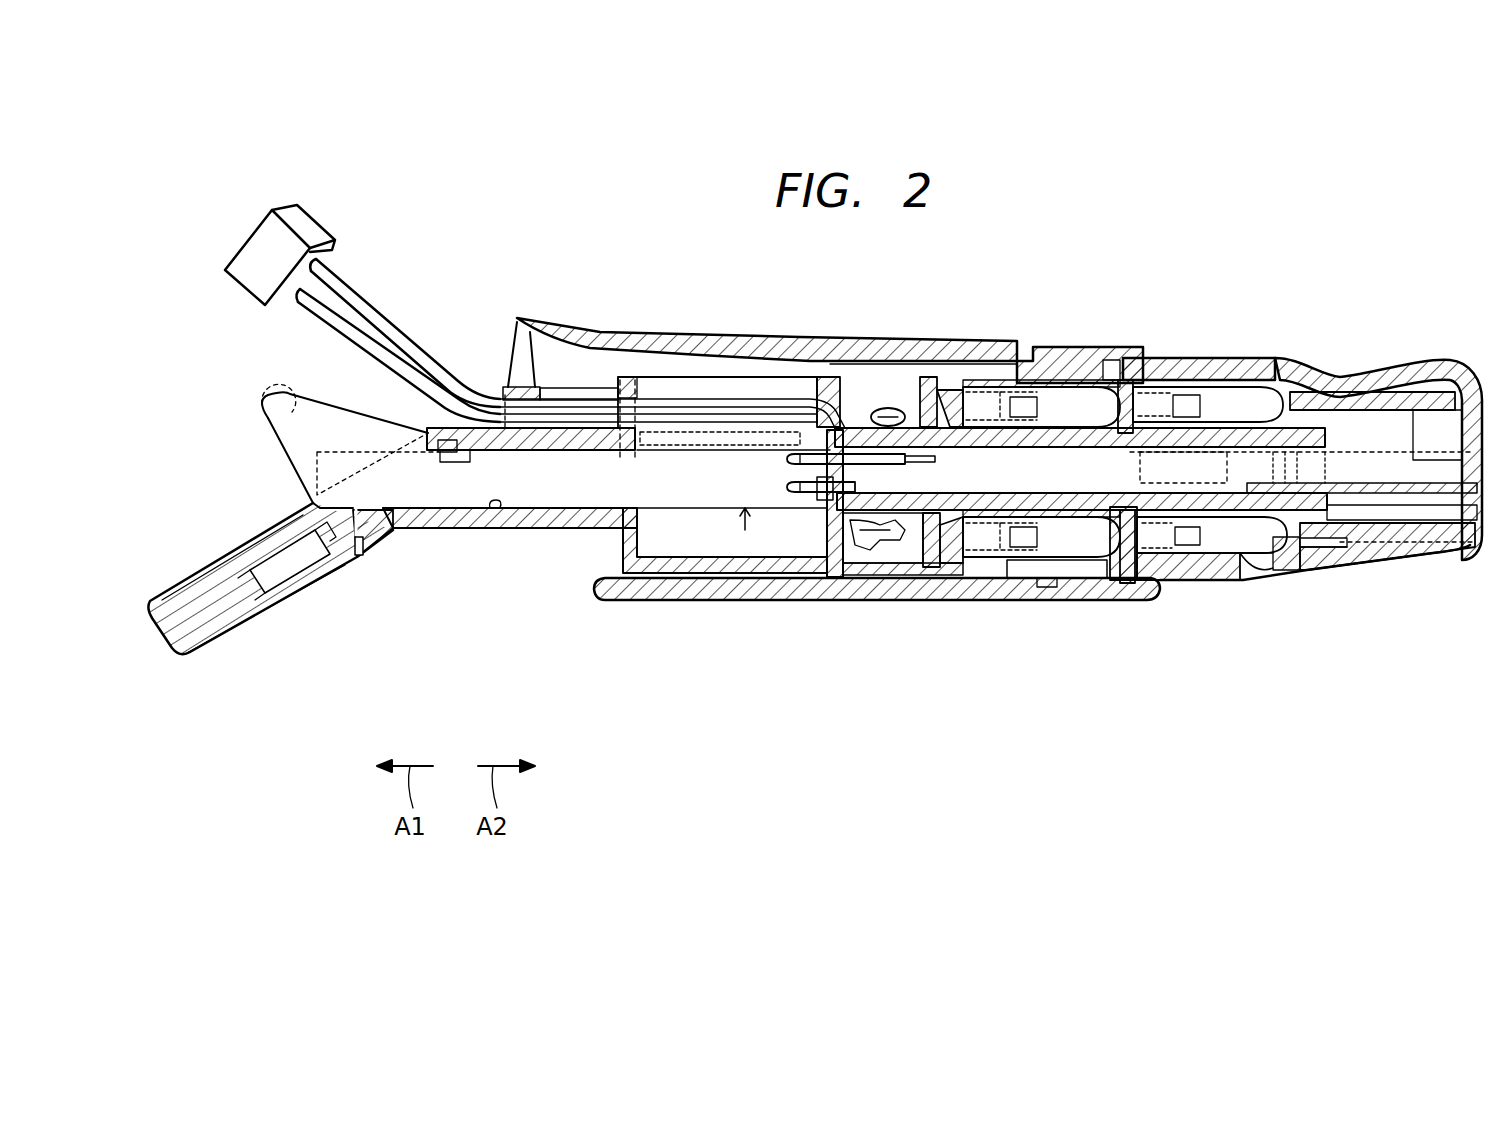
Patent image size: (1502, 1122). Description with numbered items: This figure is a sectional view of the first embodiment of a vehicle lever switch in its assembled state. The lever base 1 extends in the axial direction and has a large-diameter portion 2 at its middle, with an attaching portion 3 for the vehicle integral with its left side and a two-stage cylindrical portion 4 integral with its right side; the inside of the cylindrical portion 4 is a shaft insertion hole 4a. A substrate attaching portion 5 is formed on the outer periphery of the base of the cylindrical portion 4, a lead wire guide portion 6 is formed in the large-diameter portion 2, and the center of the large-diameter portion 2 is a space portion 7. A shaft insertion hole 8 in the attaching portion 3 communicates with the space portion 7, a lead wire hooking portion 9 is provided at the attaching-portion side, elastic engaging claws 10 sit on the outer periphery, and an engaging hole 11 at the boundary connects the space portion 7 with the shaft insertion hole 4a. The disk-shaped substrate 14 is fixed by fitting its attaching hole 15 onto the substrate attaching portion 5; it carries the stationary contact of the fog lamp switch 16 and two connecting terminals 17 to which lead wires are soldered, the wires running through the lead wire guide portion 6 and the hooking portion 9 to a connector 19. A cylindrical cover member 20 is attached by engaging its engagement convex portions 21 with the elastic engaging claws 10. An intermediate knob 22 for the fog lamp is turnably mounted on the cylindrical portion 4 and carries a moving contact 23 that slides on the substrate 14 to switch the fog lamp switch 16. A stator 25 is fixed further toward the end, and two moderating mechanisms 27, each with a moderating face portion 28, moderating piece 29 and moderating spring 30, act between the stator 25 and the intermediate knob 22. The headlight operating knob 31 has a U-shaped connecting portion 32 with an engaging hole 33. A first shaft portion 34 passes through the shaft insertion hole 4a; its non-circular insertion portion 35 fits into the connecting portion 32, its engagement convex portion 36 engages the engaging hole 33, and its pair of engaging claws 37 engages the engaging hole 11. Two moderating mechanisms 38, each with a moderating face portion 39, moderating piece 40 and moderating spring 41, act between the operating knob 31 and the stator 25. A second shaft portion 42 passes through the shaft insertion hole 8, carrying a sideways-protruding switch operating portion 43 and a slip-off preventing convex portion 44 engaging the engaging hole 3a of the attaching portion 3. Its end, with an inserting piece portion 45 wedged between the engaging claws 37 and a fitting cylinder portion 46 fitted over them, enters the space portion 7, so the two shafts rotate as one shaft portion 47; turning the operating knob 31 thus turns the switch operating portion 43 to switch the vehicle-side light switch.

The lever base 1 is at (546, 530).
The large-diameter portion 2 is at (683, 376).
The attaching portion 3 is at (320, 583).
The engaging hole 3a is at (362, 530).
The cylindrical portion 4 is at (1065, 545).
The shaft insertion hole 4a is at (1040, 497).
The substrate attaching portion 5 is at (912, 545).
The lead wire guide portion 6 is at (745, 392).
The space portion 7 is at (713, 520).
The shaft insertion hole 8 is at (588, 398).
The lead wire hooking portion 9 is at (513, 384).
The elastic engaging claws 10 is at (800, 578).
The engaging hole 11 is at (820, 482).
The substrate 14 is at (928, 398).
The attaching hole 15 is at (902, 408).
The fog lamp switch 16 is at (953, 380).
The connecting terminals 17 is at (912, 375).
The connector 19 is at (325, 235).
The cover member 20 is at (858, 345).
The engagement convex portions 21 is at (783, 582).
The intermediate knob 22 is at (1065, 350).
The moving contact 23 is at (945, 560).
The stator 25 is at (1190, 358).
The moderating mechanisms 27 is at (1125, 580).
The moderating face portion 28 is at (1168, 578).
The moderating piece 29 is at (1050, 545).
The moderating spring 30 is at (1025, 565).
The operating knob 31 is at (1437, 363).
The connecting portion 32 is at (1395, 498).
The engaging hole 33 is at (1198, 492).
The first shaft portion 34 is at (1098, 370).
The insertion portion 35 is at (1360, 465).
The engagement convex portion 36 is at (1225, 547).
The engaging claws 37 is at (786, 487).
The moderating mechanisms 38 is at (1290, 578).
The moderating face portion 39 is at (1320, 555).
The moderating piece 40 is at (1265, 572).
The moderating spring 41 is at (1200, 581).
The second shaft portion 42 is at (590, 492).
The switch operating portion 43 is at (270, 402).
The slip-off preventing convex portion 44 is at (365, 512).
The inserting piece portion 45 is at (932, 466).
The fitting cylinder portion 46 is at (812, 432).
The shaft portion 47 is at (745, 528).